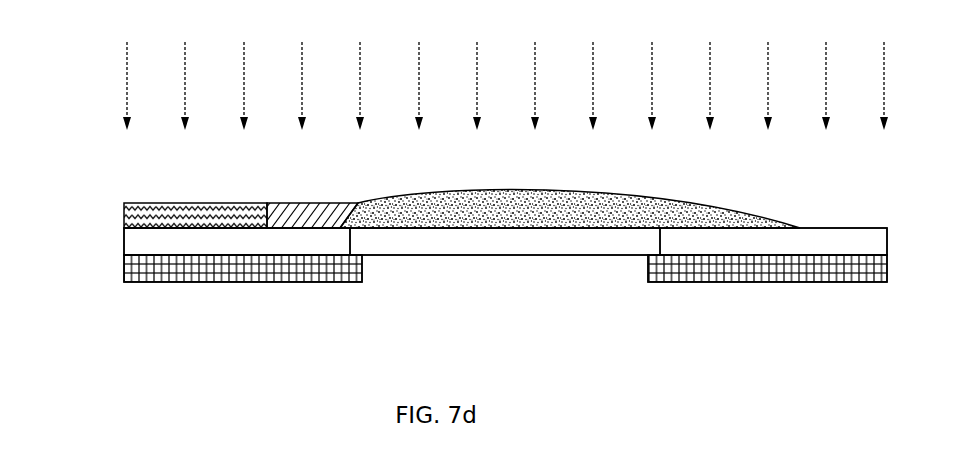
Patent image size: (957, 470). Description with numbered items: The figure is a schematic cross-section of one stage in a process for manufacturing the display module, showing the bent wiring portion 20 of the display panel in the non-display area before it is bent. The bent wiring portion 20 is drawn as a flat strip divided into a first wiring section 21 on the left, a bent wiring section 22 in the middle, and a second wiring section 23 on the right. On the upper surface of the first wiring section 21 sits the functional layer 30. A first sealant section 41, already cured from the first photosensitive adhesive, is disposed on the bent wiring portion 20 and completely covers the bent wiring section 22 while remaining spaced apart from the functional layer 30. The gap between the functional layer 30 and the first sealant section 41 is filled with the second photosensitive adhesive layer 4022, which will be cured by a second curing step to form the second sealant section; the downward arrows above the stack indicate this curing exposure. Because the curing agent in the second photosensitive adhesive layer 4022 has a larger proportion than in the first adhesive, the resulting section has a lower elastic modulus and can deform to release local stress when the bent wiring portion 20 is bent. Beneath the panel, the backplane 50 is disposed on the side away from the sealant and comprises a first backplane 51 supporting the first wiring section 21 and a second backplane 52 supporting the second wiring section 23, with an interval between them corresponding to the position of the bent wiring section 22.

The bent wiring portion 20 is at (112, 244).
The first wiring section 21 is at (230, 247).
The bent wiring section 22 is at (427, 248).
The second wiring section 23 is at (772, 250).
The functional layer 30 is at (145, 228).
The second photosensitive adhesive layer 4022 is at (318, 228).
The first sealant section 41 is at (545, 228).
The backplane 50 is at (112, 277).
The first backplane 51 is at (180, 255).
The second backplane 52 is at (722, 272).